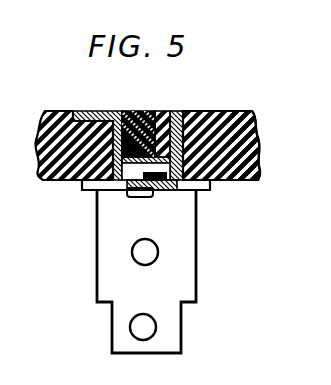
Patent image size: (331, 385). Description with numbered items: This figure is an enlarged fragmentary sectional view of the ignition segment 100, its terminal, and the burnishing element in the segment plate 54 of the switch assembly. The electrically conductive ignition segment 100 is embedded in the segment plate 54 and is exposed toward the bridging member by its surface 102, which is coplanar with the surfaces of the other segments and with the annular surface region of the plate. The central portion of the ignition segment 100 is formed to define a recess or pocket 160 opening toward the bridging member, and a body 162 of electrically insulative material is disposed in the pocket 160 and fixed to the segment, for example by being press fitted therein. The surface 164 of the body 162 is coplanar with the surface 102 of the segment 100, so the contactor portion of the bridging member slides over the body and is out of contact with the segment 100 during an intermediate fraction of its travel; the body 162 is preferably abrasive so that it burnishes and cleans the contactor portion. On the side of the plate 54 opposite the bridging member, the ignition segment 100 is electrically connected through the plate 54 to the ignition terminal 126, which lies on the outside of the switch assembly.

The surface 102 is at (93, 89).
The body 162 is at (137, 115).
The surface 164 is at (145, 117).
The recess or pocket 160 is at (185, 112).
The ignition segment 100 is at (203, 115).
The segment plate 54 is at (253, 117).
The ignition terminal 126 is at (187, 257).